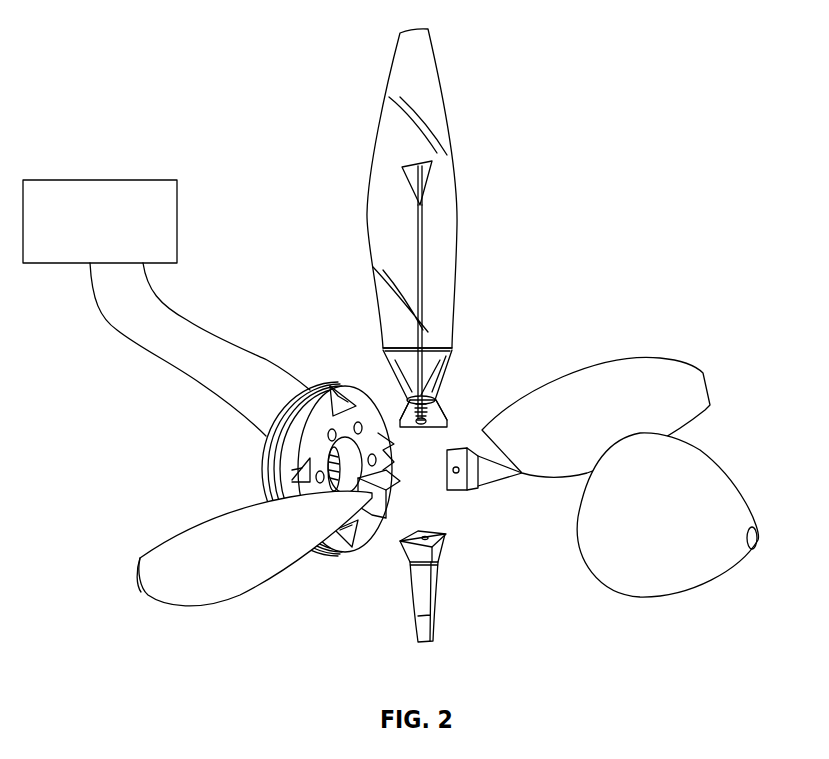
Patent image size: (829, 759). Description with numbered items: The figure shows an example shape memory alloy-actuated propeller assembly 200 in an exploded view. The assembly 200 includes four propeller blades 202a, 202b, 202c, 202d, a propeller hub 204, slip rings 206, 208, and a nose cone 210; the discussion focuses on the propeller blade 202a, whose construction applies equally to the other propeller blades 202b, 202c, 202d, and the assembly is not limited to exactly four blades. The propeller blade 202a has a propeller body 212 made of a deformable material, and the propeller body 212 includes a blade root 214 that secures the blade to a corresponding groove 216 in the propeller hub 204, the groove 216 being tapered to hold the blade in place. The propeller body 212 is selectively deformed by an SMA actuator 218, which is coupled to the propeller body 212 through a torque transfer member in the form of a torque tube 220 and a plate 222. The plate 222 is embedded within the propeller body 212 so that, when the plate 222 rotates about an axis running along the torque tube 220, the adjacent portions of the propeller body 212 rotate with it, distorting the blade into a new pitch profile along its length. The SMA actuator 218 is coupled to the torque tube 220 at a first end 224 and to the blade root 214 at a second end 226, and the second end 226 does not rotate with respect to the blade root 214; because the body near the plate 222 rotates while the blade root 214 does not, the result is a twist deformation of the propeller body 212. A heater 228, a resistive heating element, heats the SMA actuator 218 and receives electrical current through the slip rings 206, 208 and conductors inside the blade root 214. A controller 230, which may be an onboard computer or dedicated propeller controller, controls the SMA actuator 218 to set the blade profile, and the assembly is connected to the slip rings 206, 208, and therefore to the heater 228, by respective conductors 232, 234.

The SMA-actuated propeller assembly 200 is at (541, 44).
The propeller blade 202a is at (375, 177).
The propeller blade 202b is at (692, 357).
The propeller blade 202c is at (432, 595).
The propeller blade 202d is at (215, 515).
The propeller hub 204 is at (367, 400).
The slip ring 206 is at (262, 466).
The slip ring 208 is at (265, 440).
The nose cone 210 is at (692, 472).
The propeller body 212 is at (395, 88).
The blade root 214 is at (442, 430).
The groove 216 is at (332, 383).
The SMA actuator 218 is at (443, 388).
The torque tube 220 is at (422, 278).
The plate 222 is at (427, 171).
The first end 224 is at (407, 368).
The second end 226 is at (442, 405).
The heater 228 is at (438, 355).
The controller 230 is at (105, 178).
The conductor 232 is at (115, 330).
The conductor 234 is at (222, 345).